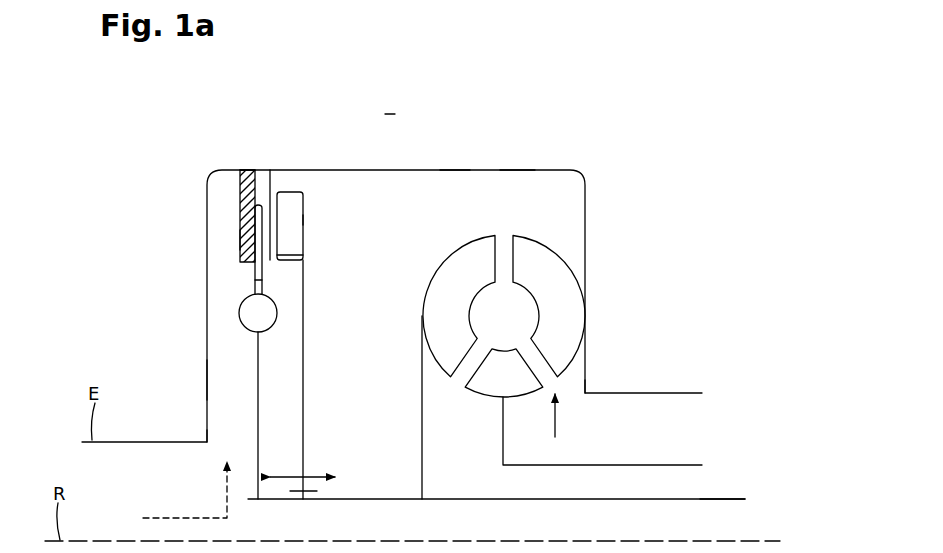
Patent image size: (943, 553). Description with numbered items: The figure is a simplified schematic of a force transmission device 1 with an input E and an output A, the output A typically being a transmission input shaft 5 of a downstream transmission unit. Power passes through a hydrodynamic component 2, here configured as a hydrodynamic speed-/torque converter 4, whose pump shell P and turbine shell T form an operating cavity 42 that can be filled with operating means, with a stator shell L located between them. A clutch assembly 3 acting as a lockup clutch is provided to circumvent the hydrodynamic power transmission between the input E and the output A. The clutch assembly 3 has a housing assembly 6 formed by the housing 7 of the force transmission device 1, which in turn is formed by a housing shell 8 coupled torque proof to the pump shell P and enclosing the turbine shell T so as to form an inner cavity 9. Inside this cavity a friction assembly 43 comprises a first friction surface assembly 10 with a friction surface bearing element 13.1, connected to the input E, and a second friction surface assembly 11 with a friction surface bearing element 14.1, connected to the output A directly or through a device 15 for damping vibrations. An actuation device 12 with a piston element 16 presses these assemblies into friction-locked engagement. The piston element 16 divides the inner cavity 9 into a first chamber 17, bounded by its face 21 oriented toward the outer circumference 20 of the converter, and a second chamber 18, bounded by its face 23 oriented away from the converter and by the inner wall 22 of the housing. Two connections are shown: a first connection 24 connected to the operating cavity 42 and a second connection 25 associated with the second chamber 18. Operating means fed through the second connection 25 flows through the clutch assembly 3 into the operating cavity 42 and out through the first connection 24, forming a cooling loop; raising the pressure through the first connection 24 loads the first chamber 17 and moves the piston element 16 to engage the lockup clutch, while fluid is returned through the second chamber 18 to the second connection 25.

The force transmission device 1 is at (389, 113).
The hydrodynamic component 2 is at (510, 302).
The hydrodynamic speed-/torque converter 4 is at (510, 302).
The clutch assembly 3 is at (237, 215).
The friction assembly 43 is at (188, 227).
The transmission input shaft 5 is at (745, 499).
The housing assembly 6 is at (298, 170).
The housing 7 is at (455, 170).
The housing shell 8 is at (518, 170).
The inner cavity 9 is at (350, 253).
The first friction surface assembly 10 is at (268, 170).
The second friction surface assembly 11 is at (255, 262).
The actuation device 12 is at (293, 222).
The friction surface bearing element 13.1 is at (256, 128).
The friction surface bearing element 14.1 is at (191, 295).
The device for damping vibrations 15 is at (238, 346).
The piston element 16 is at (297, 250).
The first chamber 17 is at (362, 420).
The second chamber 18 is at (245, 443).
The outer circumference 20 is at (423, 310).
The face 21 is at (303, 365).
The inner wall 22 is at (207, 380).
The face 23 is at (303, 393).
The first connection 24 is at (558, 390).
The second connection 25 is at (170, 495).
The operating cavity 42 is at (515, 328).